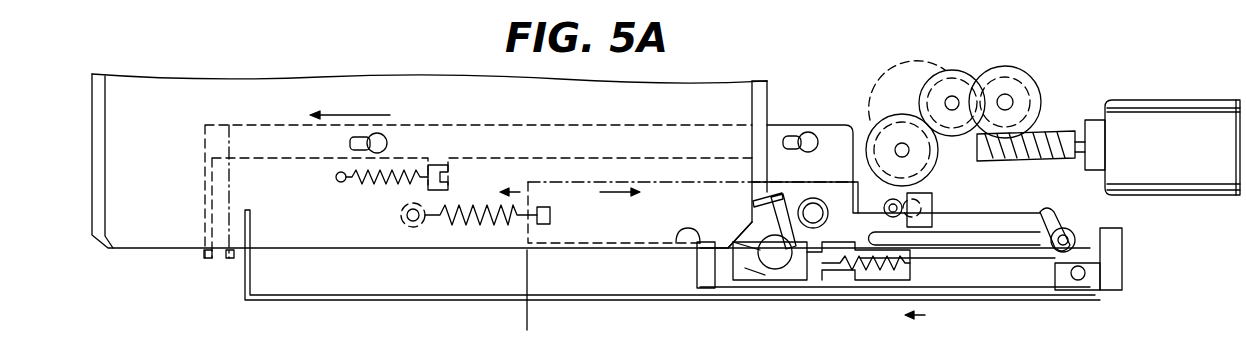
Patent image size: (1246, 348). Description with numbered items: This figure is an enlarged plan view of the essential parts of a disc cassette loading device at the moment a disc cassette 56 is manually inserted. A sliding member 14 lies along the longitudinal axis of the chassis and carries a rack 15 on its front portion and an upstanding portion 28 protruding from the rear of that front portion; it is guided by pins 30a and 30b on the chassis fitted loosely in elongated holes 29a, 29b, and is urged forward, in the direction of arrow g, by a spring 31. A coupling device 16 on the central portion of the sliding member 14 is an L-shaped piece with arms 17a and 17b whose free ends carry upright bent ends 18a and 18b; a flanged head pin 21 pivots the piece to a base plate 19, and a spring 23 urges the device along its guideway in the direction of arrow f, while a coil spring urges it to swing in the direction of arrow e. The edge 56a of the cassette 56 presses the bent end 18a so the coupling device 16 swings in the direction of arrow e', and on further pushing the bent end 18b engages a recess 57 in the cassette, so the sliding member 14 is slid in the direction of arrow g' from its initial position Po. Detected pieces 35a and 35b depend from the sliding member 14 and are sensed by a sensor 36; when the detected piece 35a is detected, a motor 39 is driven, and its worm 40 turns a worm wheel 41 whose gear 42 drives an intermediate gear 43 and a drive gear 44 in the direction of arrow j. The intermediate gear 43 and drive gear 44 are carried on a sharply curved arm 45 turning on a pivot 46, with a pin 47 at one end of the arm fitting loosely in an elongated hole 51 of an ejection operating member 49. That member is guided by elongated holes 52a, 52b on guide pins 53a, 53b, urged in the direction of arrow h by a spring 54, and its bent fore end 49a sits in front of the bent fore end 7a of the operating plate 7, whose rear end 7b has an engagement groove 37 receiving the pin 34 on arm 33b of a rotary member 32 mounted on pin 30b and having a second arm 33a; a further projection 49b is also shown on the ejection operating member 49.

The disc cassette 56 is at (216, 82).
The edge of the disc cassette 56a is at (754, 82).
The ejection operating member 49 is at (500, 122).
The fore end of the ejection operating member 49a is at (230, 260).
The plate projection 49b is at (830, 150).
The operating plate 7 is at (452, 306).
The fore end of the operating plate 7a is at (244, 288).
The chassis bent portion 7b is at (1100, 300).
The initial position Po is at (530, 299).
The arrow h is at (360, 112).
The arrow g is at (531, 142).
The arrow g' is at (625, 142).
The guide pin 53a is at (386, 140).
The elongated hole 52a is at (330, 150).
The spring 54 is at (380, 186).
The spring 31 is at (463, 233).
The rack 15 is at (752, 195).
The coupling device 16 is at (713, 226).
The bent end 18a is at (790, 205).
The arm 17a is at (753, 228).
The upstanding portion 28 is at (828, 214).
The flanged head pin 21 is at (774, 270).
The base plate 19 is at (795, 262).
The sliding member 14 is at (835, 290).
The arm 17b is at (727, 290).
The bent end 18b is at (697, 258).
The engaging portion or recess 57 is at (690, 230).
The arrow e' is at (636, 315).
The arrow e is at (682, 310).
The spring 23 is at (878, 268).
The elongated hole 29a is at (808, 132).
The elongated hole 52b is at (788, 136).
The guide pin 53b is at (800, 135).
The pin 30a is at (838, 182).
The drive gear 44 is at (868, 135).
The arrow j is at (890, 80).
The pivot 46 is at (928, 150).
The arm 45 is at (895, 66).
The intermediate gear 43 is at (950, 72).
The gear 42 is at (1026, 90).
The worm wheel 41 is at (1010, 68).
The worm 40 is at (1055, 132).
The motor 39 is at (1170, 100).
The pin 47 is at (935, 207).
The elongated hole 51 is at (925, 196).
The elongated hole 29b is at (1000, 244).
The arm 33a is at (1048, 210).
The pin 30b is at (1068, 230).
The rotary member 32 is at (1055, 272).
The sensor 36 is at (1122, 285).
The engagement groove 37 is at (1073, 290).
The pin 34 is at (1082, 282).
The arm 33b is at (1102, 268).
The detected piece 35a is at (1085, 245).
The detected piece 35b is at (940, 262).
The arrow f is at (915, 320).